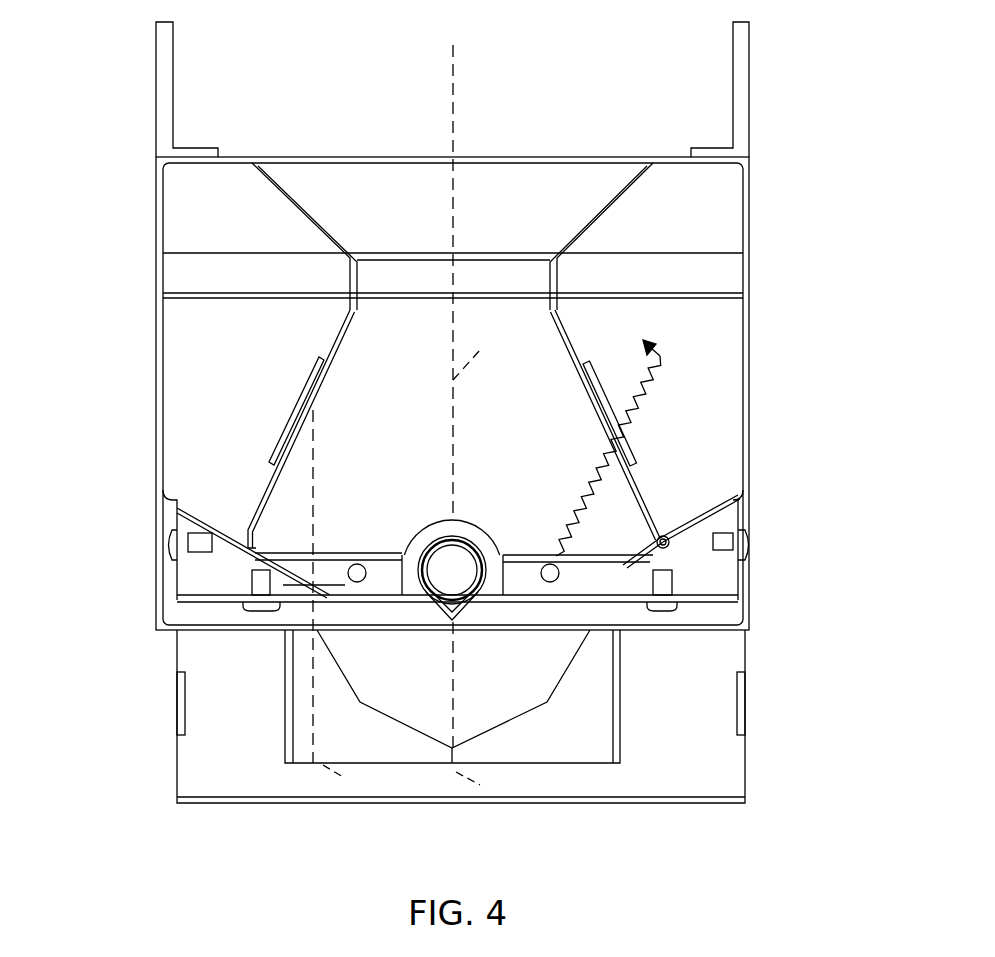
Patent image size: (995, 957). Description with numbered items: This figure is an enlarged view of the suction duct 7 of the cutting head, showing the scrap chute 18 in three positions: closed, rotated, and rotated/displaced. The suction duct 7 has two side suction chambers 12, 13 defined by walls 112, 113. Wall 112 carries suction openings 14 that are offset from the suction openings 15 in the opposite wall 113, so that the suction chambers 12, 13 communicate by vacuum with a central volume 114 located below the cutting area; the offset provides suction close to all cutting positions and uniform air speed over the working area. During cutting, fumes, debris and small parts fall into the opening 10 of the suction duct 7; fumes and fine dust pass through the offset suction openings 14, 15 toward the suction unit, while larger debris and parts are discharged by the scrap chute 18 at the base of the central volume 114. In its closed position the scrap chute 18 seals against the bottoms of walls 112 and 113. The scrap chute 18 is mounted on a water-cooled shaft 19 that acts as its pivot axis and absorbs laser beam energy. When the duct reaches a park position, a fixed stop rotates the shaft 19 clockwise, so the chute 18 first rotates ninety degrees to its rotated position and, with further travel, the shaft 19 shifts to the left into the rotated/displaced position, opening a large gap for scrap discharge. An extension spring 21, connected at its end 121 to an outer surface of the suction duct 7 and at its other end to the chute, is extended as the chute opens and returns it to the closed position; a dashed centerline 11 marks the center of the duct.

The suction duct 7 is at (727, 418).
The opening 10 is at (485, 340).
The center line 11 is at (453, 60).
The side suction chamber 12 is at (733, 347).
The side suction chamber 13 is at (175, 372).
The suction openings 14 is at (635, 447).
The suction openings 15 is at (270, 457).
The scrap chute 18 is at (453, 386).
The shaft 19 is at (490, 568).
The extension spring 21 is at (637, 410).
The wall 112 is at (627, 183).
The wall 113 is at (277, 177).
The central volume 114 is at (410, 469).
The end of extension spring 121 is at (650, 347).